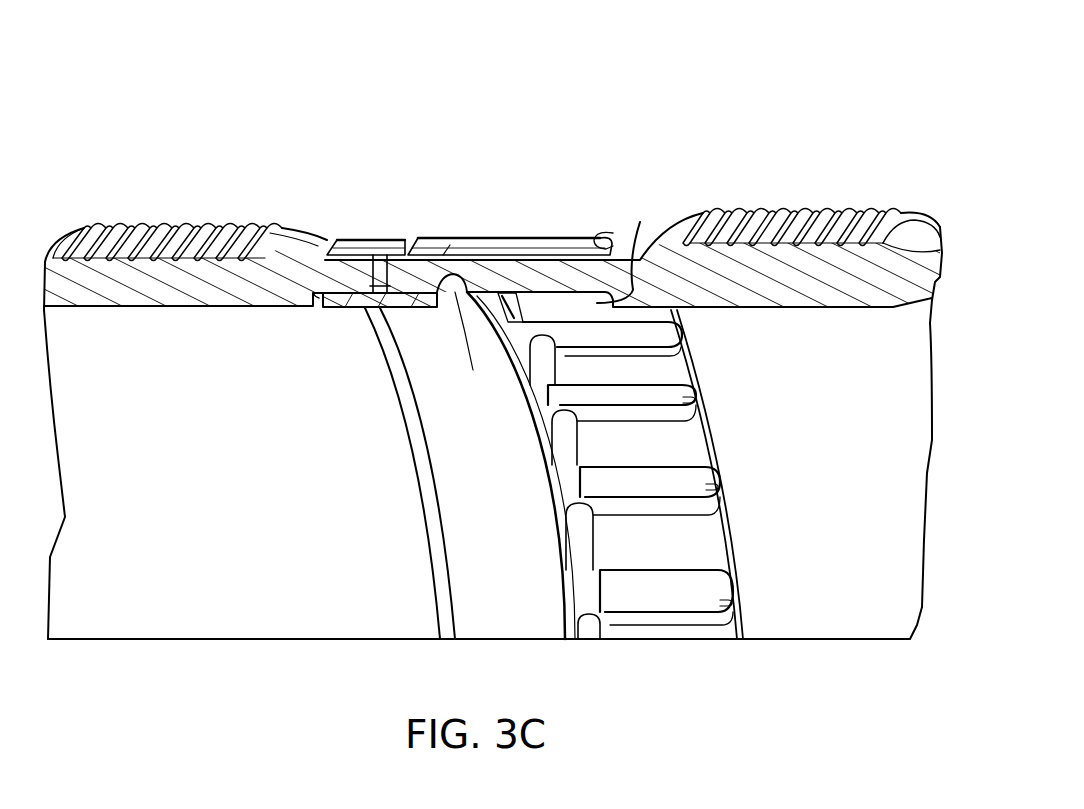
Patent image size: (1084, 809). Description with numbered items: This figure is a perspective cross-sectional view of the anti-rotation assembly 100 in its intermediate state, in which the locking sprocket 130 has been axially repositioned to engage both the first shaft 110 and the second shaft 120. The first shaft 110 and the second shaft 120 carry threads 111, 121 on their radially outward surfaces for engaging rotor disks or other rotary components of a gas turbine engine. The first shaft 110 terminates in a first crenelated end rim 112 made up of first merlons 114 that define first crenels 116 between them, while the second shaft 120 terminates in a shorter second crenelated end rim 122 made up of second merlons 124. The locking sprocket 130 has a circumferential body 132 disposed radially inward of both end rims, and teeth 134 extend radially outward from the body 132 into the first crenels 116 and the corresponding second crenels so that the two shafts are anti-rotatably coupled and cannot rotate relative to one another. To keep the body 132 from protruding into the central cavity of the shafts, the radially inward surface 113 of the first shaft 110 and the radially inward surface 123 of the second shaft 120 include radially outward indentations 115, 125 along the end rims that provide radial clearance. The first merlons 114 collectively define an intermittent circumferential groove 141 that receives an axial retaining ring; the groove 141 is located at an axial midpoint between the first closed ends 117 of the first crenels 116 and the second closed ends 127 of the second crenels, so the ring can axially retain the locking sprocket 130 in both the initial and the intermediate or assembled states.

The anti-rotation assembly 100 is at (92, 74).
The first shaft 110 is at (920, 266).
The threads 111 is at (822, 211).
The first crenelated end rim 112 is at (613, 218).
The radially inward surface 113 is at (836, 308).
The first merlons 114 is at (573, 315).
The radially outward indentation 115 is at (640, 222).
The first crenels 116 is at (663, 491).
The first closed ends 117 is at (613, 233).
The second shaft 120 is at (66, 266).
The threads 121 is at (130, 224).
The second crenelated end rim 122 is at (403, 217).
The radially inward surface 123 is at (207, 307).
The second merlons 124 is at (348, 309).
The radially outward indentation 125 is at (310, 302).
The second closed ends 127 is at (332, 240).
The locking sprocket 130 is at (360, 310).
The circumferential body 132 is at (440, 443).
The teeth 134 is at (342, 243).
The intermittent circumferential groove 141 is at (505, 312).